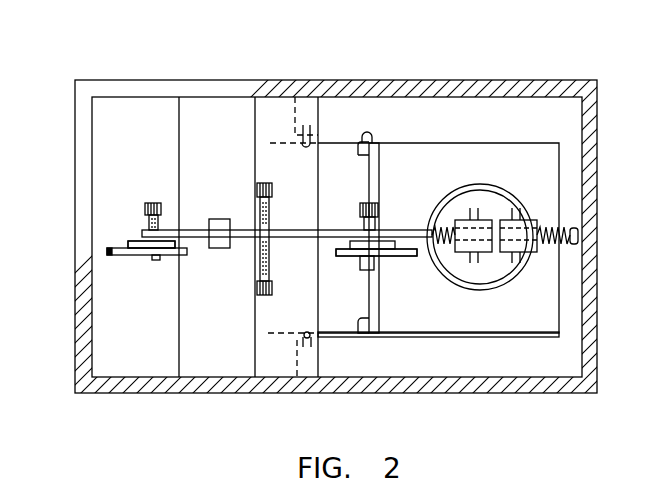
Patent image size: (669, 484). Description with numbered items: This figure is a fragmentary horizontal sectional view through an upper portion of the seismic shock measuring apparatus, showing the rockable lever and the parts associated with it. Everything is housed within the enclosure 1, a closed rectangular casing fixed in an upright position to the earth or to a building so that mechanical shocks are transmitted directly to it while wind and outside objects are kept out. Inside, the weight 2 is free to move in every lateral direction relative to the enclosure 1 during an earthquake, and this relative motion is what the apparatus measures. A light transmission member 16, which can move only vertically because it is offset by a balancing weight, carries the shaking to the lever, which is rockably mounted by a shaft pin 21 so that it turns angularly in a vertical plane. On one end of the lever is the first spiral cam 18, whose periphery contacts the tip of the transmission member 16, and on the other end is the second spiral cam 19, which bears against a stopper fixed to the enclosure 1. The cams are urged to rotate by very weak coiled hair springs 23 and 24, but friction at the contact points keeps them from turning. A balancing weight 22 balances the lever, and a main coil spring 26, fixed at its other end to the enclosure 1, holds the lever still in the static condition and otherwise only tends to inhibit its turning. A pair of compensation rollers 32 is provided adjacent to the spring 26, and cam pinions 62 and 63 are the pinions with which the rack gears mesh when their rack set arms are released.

The enclosure 1 is at (134, 80).
The weight 2 is at (468, 186).
The transmission member 16 is at (408, 152).
The first spiral cam 18 is at (415, 257).
The second spiral cam 19 is at (107, 250).
The shaft pin 21 is at (264, 295).
The balancing weight 22 is at (222, 219).
The coiled hair spring 23 is at (349, 241).
The coiled hair spring 24 is at (171, 246).
The main coil spring 26 is at (579, 226).
The compensation rollers 32 is at (512, 220).
The cam pinion 62 is at (364, 240).
The cam pinion 63 is at (145, 208).